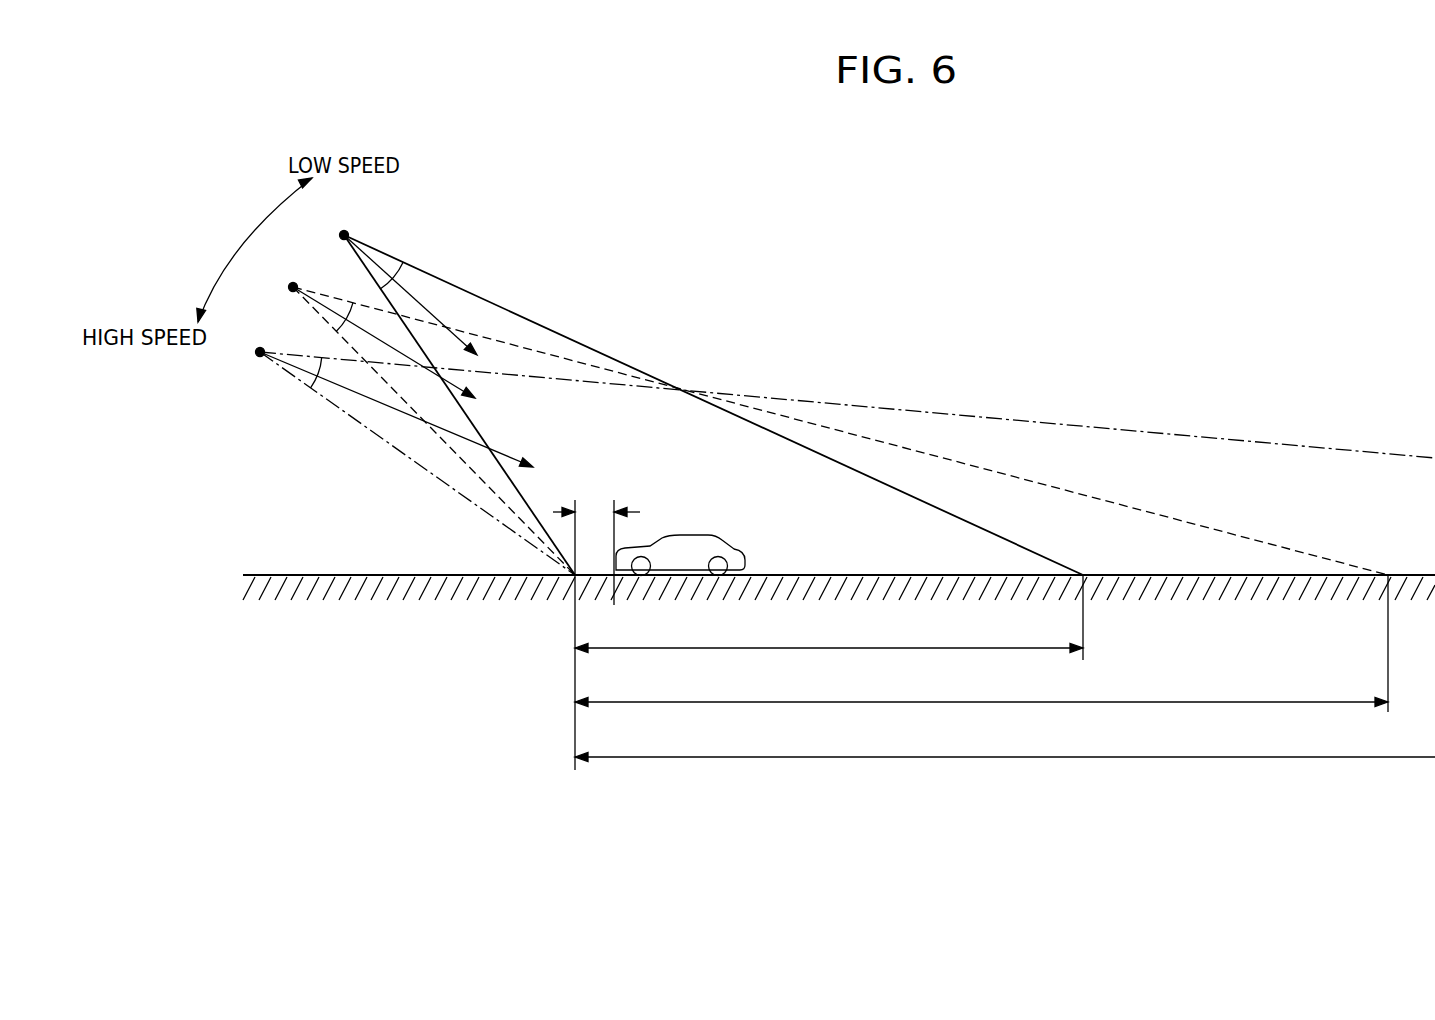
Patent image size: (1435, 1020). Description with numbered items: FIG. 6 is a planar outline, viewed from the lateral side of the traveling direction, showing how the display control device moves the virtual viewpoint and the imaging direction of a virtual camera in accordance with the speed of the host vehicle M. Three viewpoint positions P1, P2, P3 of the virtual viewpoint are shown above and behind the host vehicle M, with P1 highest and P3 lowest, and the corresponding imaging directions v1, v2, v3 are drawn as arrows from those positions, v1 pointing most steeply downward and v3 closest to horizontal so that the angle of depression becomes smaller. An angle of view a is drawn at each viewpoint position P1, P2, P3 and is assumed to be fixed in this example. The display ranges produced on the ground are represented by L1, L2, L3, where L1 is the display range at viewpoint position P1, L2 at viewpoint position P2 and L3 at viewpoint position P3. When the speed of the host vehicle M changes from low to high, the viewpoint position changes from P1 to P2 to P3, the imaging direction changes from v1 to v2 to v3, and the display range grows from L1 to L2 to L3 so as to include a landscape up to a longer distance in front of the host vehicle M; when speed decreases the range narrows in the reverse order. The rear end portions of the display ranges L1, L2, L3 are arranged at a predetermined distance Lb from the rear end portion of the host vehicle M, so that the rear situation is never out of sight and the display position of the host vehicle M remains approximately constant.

The viewpoint position P1 is at (705, 386).
The viewpoint position P2 is at (826, 416).
The viewpoint position P3 is at (828, 449).
The imaging direction v1 is at (410, 295).
The imaging direction v2 is at (401, 349).
The imaging direction v3 is at (411, 412).
The angle of view a is at (398, 272).
The display range L1 is at (829, 617).
The display range L2 is at (981, 643).
The display range L3 is at (1005, 745).
The predetermined distance Lb is at (596, 624).
The host vehicle M is at (686, 543).